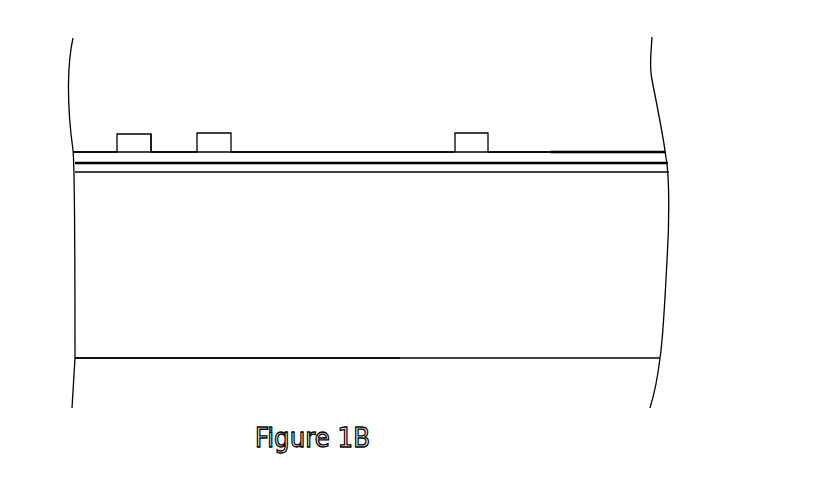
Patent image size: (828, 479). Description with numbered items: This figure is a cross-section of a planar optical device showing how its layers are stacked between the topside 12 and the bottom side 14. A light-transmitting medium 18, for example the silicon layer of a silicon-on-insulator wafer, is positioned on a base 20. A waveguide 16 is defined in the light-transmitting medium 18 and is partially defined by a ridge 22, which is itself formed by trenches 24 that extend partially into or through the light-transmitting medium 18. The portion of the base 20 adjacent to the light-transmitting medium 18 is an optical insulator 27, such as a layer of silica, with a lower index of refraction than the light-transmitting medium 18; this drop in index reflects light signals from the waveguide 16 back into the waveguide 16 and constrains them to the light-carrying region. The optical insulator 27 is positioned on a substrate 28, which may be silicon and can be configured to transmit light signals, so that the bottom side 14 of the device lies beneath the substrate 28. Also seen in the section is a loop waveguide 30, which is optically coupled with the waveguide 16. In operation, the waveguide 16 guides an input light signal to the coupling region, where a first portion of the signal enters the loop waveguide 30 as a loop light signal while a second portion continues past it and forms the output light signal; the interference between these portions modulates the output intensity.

The topside 12 is at (535, 152).
The bottom side 14 is at (385, 358).
The waveguide 16 is at (134, 116).
The light-transmitting medium 18 is at (657, 158).
The base 20 is at (672, 165).
The ridge 22 is at (152, 133).
The trenches 24 is at (83, 151).
The optical insulator 27 is at (298, 170).
The substrate 28 is at (138, 337).
The loop waveguide 30 is at (221, 124).